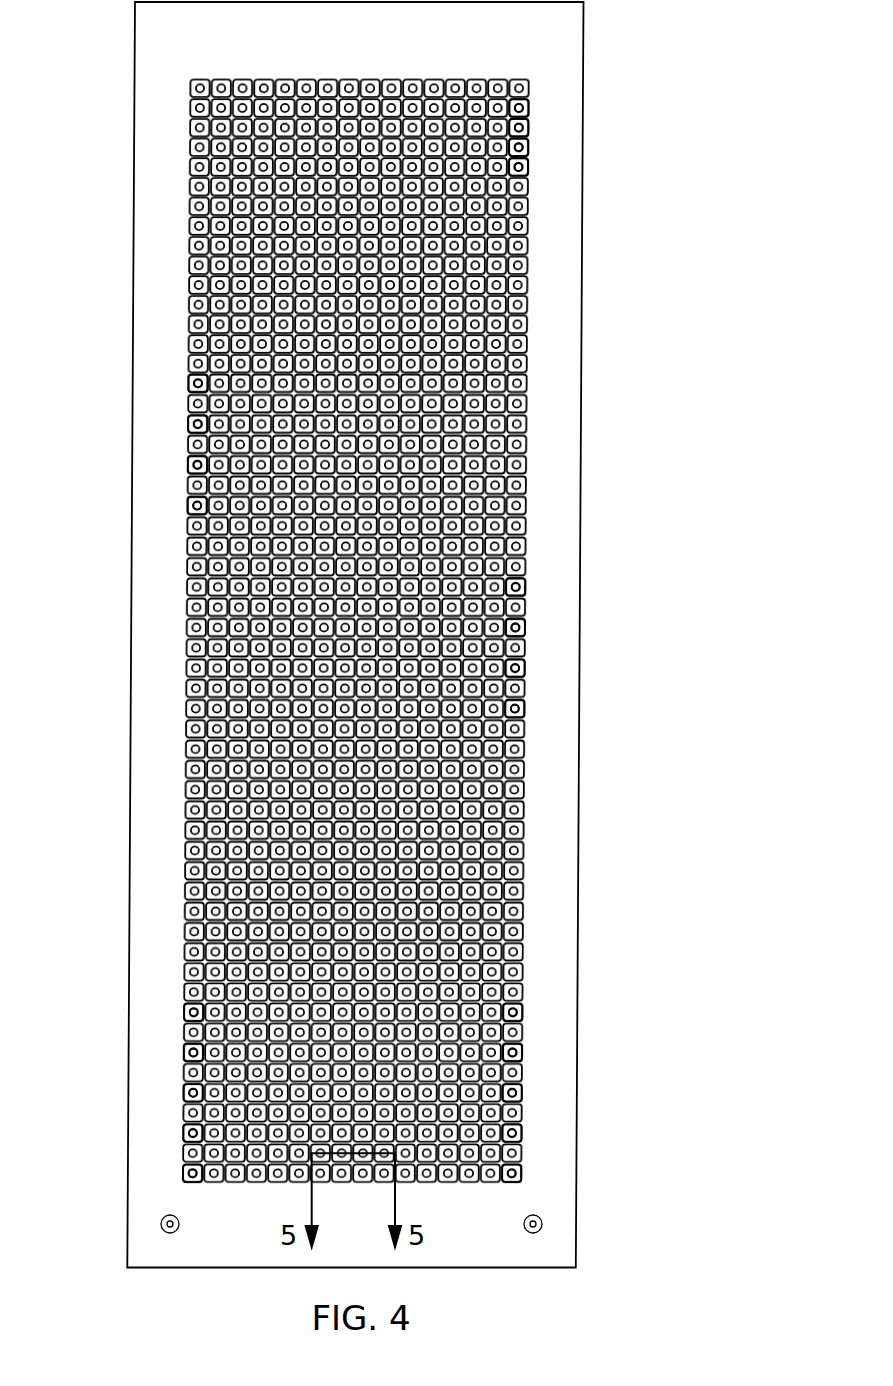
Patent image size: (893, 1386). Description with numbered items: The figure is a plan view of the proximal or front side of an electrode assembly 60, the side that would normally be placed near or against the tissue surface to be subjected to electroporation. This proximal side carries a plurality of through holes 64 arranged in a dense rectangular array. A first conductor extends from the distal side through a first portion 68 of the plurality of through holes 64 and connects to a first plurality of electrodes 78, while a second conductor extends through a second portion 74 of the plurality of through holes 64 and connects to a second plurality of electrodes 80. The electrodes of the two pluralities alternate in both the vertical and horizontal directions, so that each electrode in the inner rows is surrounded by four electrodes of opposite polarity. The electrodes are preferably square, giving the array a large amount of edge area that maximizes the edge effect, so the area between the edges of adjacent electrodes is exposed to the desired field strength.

The electrode assembly 60 is at (618, 23).
The plurality of through holes 64 is at (519, 108).
The first portion of the plurality of through holes 68 is at (198, 383).
The second portion of the plurality of through holes 74 is at (516, 587).
The first plurality of electrodes 78 is at (513, 1012).
The second plurality of electrodes 80 is at (194, 1012).